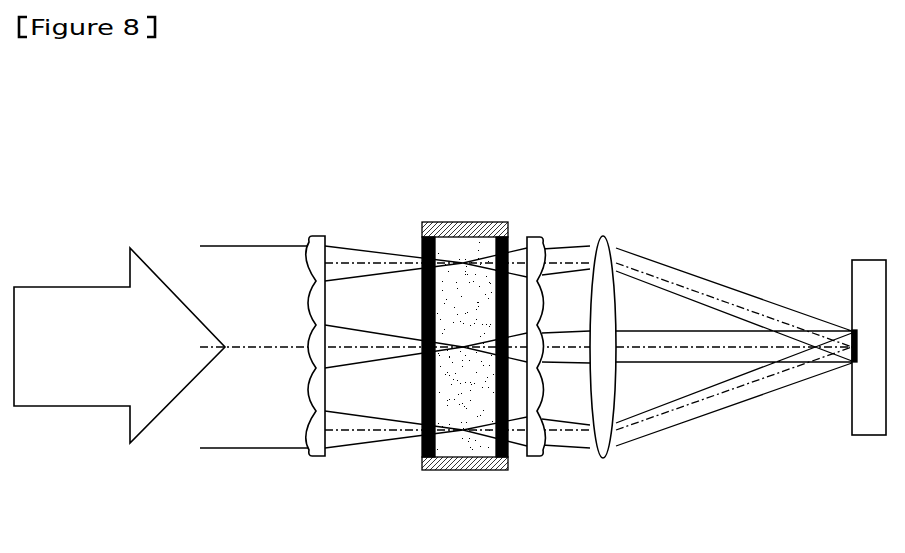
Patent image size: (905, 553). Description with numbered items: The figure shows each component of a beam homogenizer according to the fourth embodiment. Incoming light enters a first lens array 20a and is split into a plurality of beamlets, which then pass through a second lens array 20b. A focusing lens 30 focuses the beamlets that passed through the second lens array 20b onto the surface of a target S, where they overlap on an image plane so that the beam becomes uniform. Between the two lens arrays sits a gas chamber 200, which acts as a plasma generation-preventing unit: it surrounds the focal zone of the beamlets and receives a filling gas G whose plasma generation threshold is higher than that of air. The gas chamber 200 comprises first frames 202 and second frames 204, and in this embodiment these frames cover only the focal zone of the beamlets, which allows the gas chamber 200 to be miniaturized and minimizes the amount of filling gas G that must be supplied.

The gas chamber 200 is at (443, 340).
The first frames 202 is at (437, 229).
The second frames 204 is at (421, 445).
The filling gas G is at (471, 417).
The first lens array 20a is at (313, 398).
The second lens array 20b is at (545, 403).
The focusing lens 30 is at (607, 237).
The target S is at (871, 268).